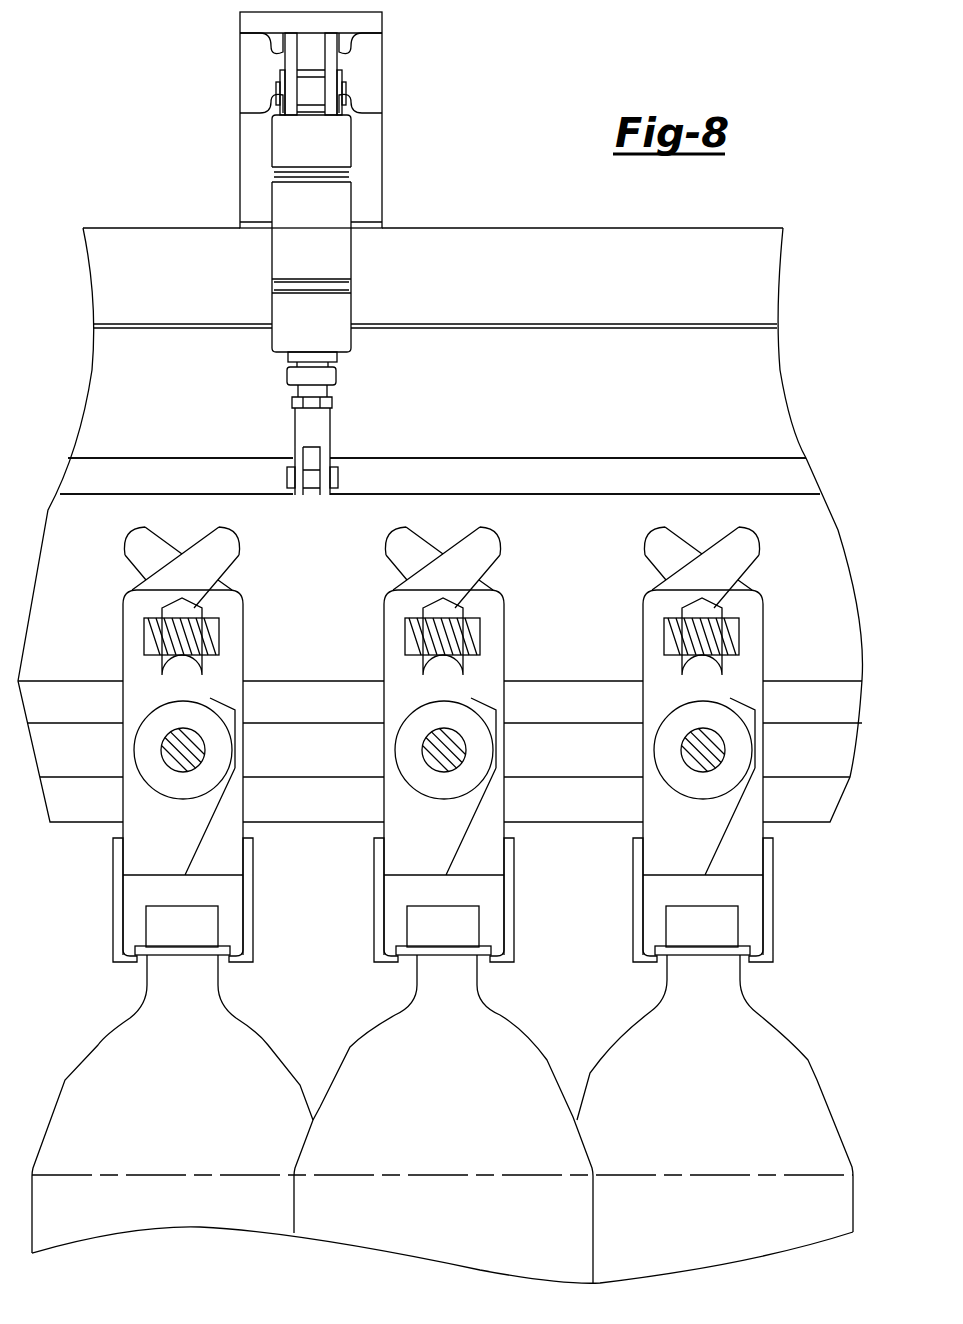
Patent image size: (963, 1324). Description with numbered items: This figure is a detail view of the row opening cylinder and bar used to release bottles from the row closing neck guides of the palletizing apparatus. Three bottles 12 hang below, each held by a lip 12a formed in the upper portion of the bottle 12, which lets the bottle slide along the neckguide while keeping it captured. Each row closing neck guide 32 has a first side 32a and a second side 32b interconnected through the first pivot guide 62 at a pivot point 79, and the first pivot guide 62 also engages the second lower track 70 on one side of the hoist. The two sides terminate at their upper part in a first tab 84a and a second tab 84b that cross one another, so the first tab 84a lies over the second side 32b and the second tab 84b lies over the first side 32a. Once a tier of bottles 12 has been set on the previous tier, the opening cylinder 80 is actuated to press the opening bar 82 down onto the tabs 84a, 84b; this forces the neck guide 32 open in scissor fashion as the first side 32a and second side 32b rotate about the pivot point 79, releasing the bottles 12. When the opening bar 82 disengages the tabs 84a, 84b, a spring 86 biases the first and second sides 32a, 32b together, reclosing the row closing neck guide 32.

The opening cylinder 80 is at (338, 203).
The opening bar 82 is at (441, 478).
The second lower track 70 is at (835, 698).
The first tab 84a is at (222, 547).
The second tab 84b is at (138, 548).
The spring 86 is at (148, 630).
The pivot point 79 is at (146, 708).
The first pivot guide 62 is at (197, 748).
The row closing neck guide 32 is at (176, 741).
The first side 32a is at (118, 897).
The second side 32b is at (248, 883).
The bottle 12 is at (85, 1052).
The lip 12a is at (415, 950).